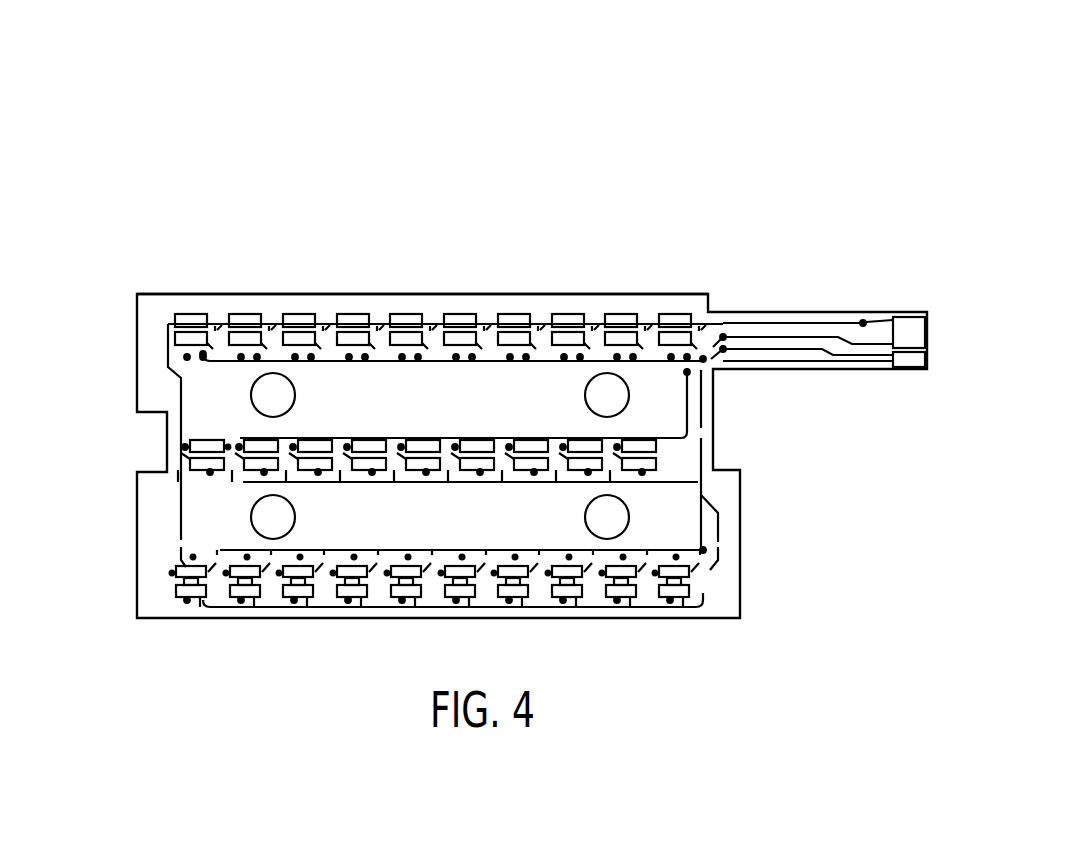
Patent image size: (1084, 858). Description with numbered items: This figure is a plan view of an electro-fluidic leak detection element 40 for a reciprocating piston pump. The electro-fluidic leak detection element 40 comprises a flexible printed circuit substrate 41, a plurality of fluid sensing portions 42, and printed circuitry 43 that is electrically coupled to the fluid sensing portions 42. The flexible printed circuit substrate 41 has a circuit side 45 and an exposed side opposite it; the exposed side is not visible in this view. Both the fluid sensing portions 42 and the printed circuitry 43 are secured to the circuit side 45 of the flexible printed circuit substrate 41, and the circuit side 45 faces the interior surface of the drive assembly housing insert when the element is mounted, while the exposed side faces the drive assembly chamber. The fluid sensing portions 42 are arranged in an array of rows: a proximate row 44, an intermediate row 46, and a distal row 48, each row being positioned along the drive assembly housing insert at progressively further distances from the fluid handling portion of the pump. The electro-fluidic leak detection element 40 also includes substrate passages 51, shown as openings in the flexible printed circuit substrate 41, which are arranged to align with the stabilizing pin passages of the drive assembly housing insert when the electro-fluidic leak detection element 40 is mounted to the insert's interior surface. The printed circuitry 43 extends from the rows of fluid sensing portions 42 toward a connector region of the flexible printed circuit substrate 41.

The electro-fluidic leak detection element 40 is at (435, 78).
The flexible printed circuit substrate 41 is at (245, 293).
The fluid sensing portion 42 is at (570, 315).
The printed circuitry 43 is at (808, 336).
The proximate row 44 is at (383, 408).
The circuit side 45 is at (470, 416).
The intermediate row 46 is at (102, 439).
The distal row 48 is at (102, 561).
The substrate passage 51 is at (608, 530).